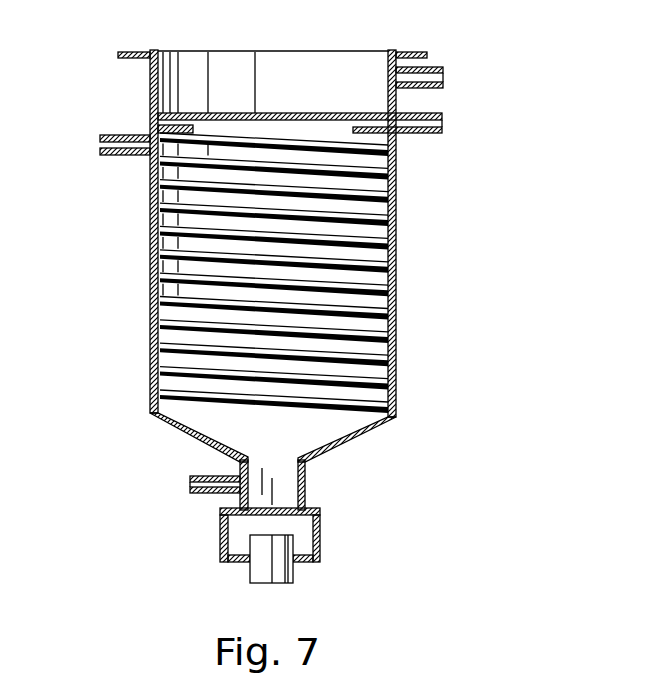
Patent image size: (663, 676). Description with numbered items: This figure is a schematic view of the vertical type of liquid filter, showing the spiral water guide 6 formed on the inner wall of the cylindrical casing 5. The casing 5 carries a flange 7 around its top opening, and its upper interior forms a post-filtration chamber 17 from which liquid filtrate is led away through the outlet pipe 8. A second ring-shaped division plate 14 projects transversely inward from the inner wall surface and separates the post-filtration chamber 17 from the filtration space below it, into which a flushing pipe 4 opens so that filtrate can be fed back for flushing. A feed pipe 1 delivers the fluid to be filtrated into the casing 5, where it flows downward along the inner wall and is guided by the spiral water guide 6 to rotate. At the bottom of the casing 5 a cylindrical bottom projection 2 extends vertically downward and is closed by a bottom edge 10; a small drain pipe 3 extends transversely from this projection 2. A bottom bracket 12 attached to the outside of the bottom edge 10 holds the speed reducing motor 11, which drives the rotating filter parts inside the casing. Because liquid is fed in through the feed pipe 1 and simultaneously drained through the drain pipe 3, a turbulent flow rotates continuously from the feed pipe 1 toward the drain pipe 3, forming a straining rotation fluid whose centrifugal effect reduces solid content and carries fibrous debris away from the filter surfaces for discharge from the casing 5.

The feed pipe 1 is at (100, 138).
The cylindrical bottom projection 2 is at (305, 483).
The drain pipe 3 is at (197, 494).
The flushing pipe 4 is at (442, 127).
The cylindrical casing 5 is at (396, 358).
The spiral water guide 6 is at (380, 263).
The flange 7 is at (417, 51).
The outlet pipe 8 is at (443, 77).
The bottom edge 10 is at (312, 512).
The speed reducing motor 11 is at (293, 577).
The bottom bracket 12 is at (320, 540).
The second ring-shaped division plate 14 is at (172, 132).
The post-filtration chamber 17 is at (316, 65).